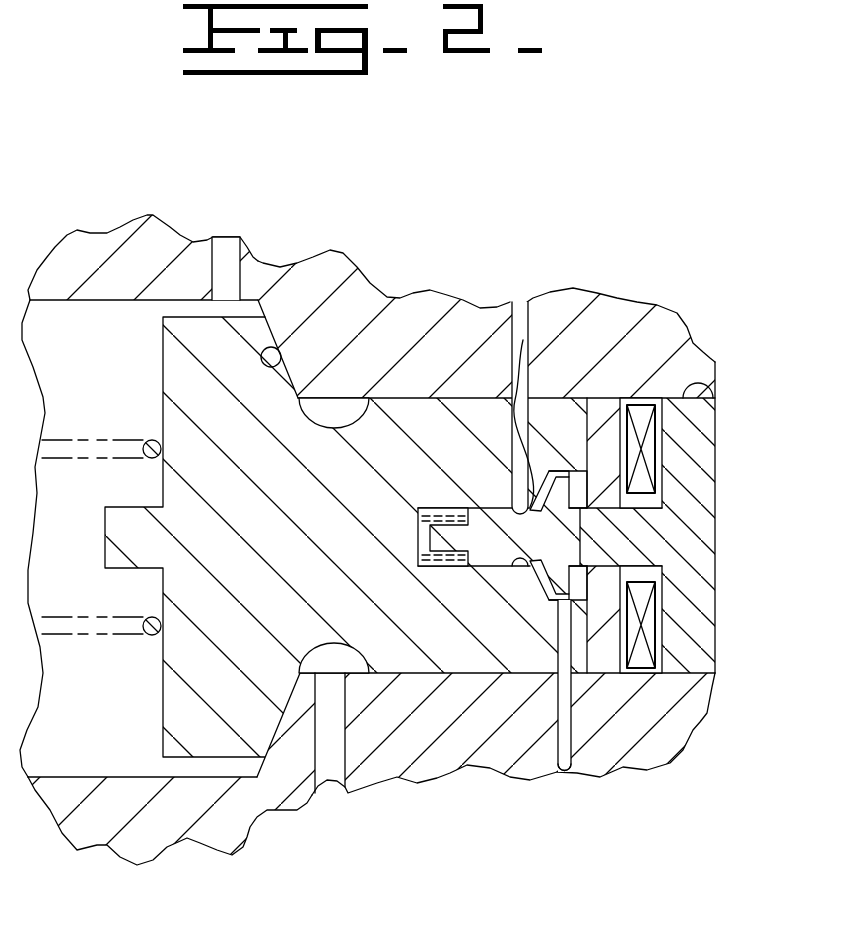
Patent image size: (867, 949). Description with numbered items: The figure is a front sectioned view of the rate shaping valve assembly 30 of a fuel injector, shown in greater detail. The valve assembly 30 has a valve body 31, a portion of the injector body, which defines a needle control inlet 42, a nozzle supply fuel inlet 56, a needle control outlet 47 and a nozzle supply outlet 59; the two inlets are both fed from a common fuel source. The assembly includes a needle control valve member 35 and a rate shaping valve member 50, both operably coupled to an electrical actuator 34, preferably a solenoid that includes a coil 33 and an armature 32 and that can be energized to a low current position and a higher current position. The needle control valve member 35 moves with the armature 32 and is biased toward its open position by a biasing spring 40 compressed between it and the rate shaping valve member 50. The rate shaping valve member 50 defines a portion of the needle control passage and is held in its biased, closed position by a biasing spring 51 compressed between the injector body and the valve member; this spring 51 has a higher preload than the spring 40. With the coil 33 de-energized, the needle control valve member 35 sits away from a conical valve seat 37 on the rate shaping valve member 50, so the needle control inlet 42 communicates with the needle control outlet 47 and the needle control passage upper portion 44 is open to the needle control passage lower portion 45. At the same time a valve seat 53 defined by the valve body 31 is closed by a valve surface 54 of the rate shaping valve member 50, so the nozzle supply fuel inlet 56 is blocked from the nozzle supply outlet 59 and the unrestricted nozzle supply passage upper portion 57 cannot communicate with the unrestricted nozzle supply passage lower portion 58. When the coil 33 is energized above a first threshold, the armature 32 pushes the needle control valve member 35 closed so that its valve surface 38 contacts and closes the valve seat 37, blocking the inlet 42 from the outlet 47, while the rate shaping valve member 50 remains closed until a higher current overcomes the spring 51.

The rate shaping valve assembly 30 is at (218, 865).
The valve body 31 is at (330, 268).
The armature 32 is at (720, 388).
The coil 33 is at (640, 668).
The electrical actuator 34 is at (597, 674).
The needle control valve member 35 is at (549, 470).
The conical valve seat 37 is at (533, 567).
The valve surface 38 is at (517, 452).
The biasing spring 40 is at (423, 564).
The needle control inlet 42 is at (523, 340).
The needle control passage upper portion 44 is at (512, 302).
The needle control passage lower portion 45 is at (558, 771).
The needle control outlet 47 is at (562, 676).
The rate shaping valve member 50 is at (410, 547).
The biasing spring 51 is at (133, 635).
The valve seat 53 is at (378, 278).
The valve surface 54 is at (277, 713).
The nozzle supply fuel inlet 56 is at (233, 296).
The unrestricted nozzle supply passage upper portion 57 is at (222, 257).
The unrestricted nozzle supply passage lower portion 58 is at (332, 787).
The nozzle supply outlet 59 is at (328, 675).